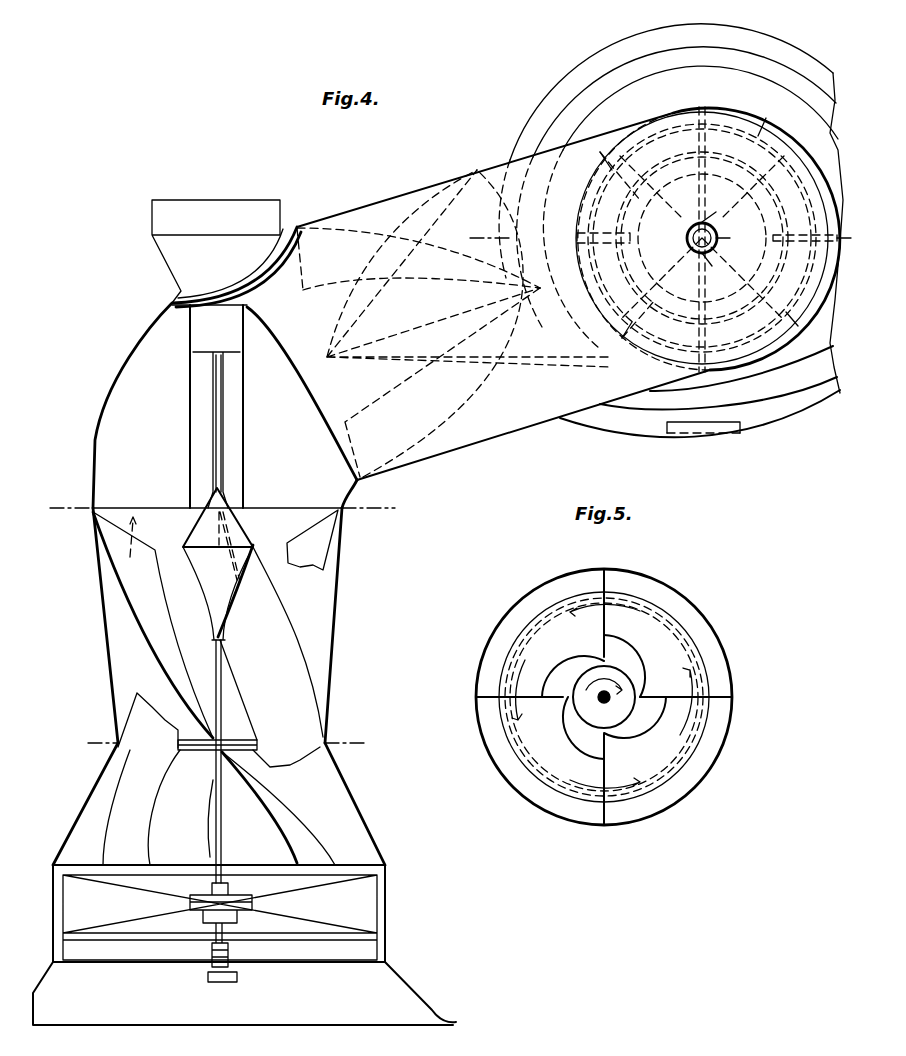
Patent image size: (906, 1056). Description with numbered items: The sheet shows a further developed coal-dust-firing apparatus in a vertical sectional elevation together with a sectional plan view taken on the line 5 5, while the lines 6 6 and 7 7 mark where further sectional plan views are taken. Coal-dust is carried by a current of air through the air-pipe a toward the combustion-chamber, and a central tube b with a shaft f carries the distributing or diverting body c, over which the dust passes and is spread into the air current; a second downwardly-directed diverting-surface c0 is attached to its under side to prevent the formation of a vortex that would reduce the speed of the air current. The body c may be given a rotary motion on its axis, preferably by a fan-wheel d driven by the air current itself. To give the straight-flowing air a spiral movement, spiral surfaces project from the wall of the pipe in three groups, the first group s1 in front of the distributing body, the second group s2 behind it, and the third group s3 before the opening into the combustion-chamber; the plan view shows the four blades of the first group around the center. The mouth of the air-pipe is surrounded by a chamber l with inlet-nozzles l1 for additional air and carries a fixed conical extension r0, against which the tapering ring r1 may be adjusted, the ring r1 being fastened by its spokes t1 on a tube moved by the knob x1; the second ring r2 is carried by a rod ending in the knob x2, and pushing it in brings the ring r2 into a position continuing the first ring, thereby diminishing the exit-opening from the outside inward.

In FIG. 4, the air-pipe a is at (110, 428).
In FIG. 5, the air-pipe a is at (545, 590).
In FIG. 4, the central tube b is at (244, 452).
In FIG. 4, the distributing or diverting body c is at (204, 530).
In FIG. 5, the distributing or diverting body c is at (604, 697).
In FIG. 4, the second downwardly-directed diverting-surface c0 is at (215, 588).
In FIG. 4, the fan-wheel d is at (244, 945).
In FIG. 4, the shaft f is at (232, 430).
In FIG. 4, the first group of spiral surfaces s1 is at (310, 562).
In FIG. 5, the first group of spiral surfaces s1 is at (643, 638).
In FIG. 4, the second group of spiral surfaces s2 is at (352, 292).
In FIG. 4, the third group of spiral surfaces s3 is at (596, 203).
In FIG. 4, the chamber l is at (752, 420).
In FIG. 4, the inlet-nozzle l1 is at (714, 435).
In FIG. 4, the fixed conical extension r0 is at (806, 160).
In FIG. 4, the tapering ring r1 is at (812, 188).
In FIG. 4, the second ring r2 is at (790, 224).
In FIG. 4, the spokes t1 is at (699, 226).
In FIG. 4, the knob x1 is at (714, 267).
In FIG. 4, the knob x2 is at (716, 235).
In FIG. 4, the section line 5 5 is at (222, 505).
In FIG. 4, the section line 6 6 is at (223, 743).
In FIG. 4, the section line 7 7 is at (654, 243).